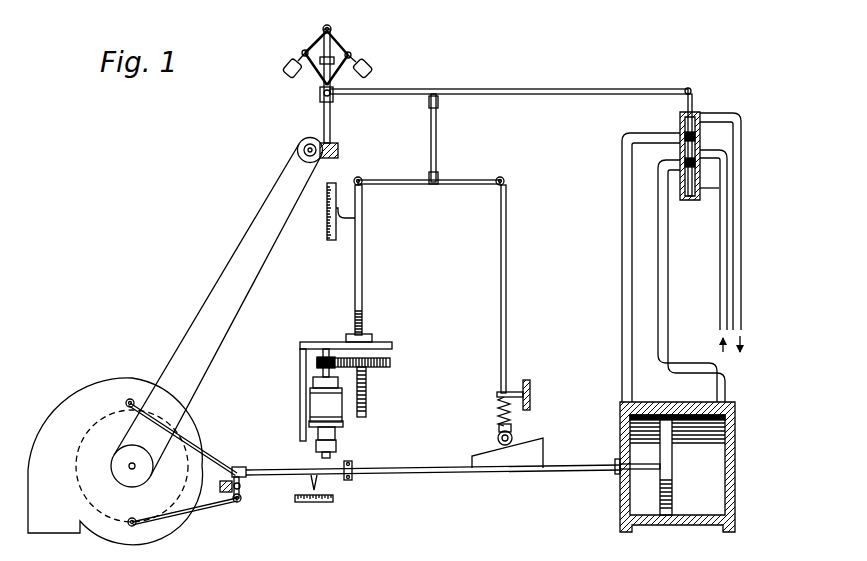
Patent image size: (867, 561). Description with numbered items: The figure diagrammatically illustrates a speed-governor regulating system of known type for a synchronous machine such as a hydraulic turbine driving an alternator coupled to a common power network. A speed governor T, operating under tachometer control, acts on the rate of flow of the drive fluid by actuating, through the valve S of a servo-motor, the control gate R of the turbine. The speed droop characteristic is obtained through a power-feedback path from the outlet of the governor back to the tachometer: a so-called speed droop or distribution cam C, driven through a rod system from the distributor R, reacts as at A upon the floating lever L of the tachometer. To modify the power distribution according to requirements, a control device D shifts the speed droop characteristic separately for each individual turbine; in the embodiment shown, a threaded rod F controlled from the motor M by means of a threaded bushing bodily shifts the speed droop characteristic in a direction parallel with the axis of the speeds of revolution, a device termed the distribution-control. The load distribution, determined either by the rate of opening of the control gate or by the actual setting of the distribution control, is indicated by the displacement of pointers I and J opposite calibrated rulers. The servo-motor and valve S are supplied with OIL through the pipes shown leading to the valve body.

The speed governor T is at (351, 46).
The floating lever L is at (533, 84).
The reaction point on the floating lever A is at (436, 88).
The valve S is at (696, 114).
The oil supply pipes OIL is at (725, 150).
The threaded rod F is at (367, 298).
The pointer J is at (329, 246).
The control device D is at (316, 342).
The motor M is at (344, 430).
The speed droop cam C is at (542, 450).
The pointer I is at (336, 503).
The control gate R is at (168, 536).